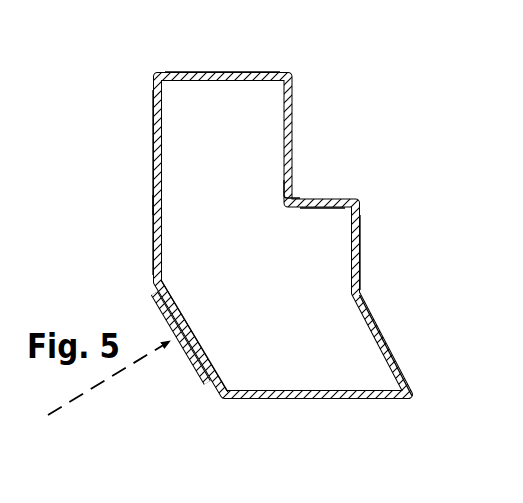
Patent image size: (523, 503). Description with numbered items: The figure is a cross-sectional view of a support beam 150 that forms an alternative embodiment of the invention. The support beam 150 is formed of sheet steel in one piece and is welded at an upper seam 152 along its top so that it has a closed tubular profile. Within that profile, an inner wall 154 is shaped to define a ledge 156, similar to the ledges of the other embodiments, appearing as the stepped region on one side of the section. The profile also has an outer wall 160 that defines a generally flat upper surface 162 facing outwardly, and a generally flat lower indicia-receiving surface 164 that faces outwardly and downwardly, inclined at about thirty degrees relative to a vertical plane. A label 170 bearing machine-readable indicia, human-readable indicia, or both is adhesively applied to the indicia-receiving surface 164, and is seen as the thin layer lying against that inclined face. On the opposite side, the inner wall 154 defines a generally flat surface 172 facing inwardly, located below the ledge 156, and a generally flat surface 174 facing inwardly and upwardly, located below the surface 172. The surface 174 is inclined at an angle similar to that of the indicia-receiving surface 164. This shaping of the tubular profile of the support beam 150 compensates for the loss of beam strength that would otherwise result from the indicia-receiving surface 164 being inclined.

The support beam 150 is at (136, 142).
The upper seam 152 is at (218, 72).
The inner wall 154 is at (359, 218).
The ledge 156 is at (305, 192).
The outer wall 160 is at (155, 227).
The upper surface 162 is at (156, 206).
The indicia-receiving surface 164 is at (200, 366).
The label 170 is at (166, 318).
The surface 172 is at (362, 258).
The surface 174 is at (388, 341).